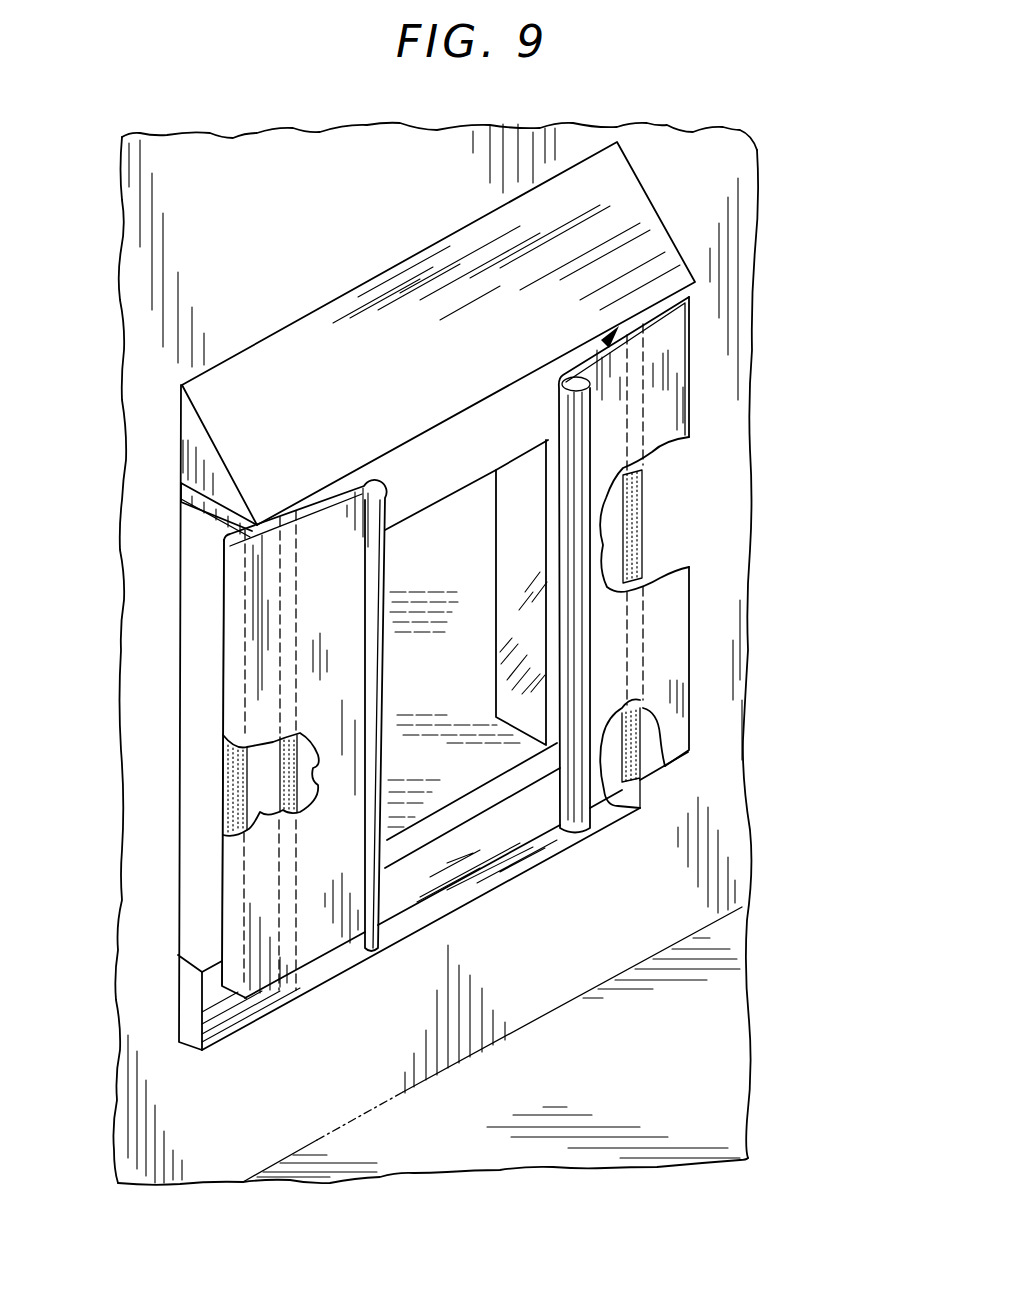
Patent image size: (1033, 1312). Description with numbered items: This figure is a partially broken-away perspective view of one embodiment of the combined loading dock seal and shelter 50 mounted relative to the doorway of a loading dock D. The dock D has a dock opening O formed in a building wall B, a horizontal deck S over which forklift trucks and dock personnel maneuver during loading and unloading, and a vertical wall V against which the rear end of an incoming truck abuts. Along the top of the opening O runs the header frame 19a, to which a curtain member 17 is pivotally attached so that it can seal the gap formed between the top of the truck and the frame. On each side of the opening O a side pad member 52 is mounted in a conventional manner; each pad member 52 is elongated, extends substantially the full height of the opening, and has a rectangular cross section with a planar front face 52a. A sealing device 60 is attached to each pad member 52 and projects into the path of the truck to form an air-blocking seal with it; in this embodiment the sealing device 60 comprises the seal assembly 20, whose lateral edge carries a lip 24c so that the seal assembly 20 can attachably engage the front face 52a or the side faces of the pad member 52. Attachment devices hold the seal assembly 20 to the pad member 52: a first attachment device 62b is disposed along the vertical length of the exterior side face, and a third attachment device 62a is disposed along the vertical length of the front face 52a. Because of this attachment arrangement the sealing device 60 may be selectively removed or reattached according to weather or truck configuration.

The header frame 19a is at (195, 462).
The side pad member 52 is at (195, 578).
The lip 24c is at (235, 604).
The seal assembly 20 is at (315, 606).
The front face 52a is at (257, 773).
The first attachment device 62b is at (283, 807).
The third attachment device 62a is at (232, 825).
The sealing device 60 is at (277, 1040).
The curtain member 17 is at (497, 457).
The loading dock D is at (692, 210).
The building wall B is at (338, 234).
The dock opening O is at (460, 567).
The deck S is at (429, 768).
The vertical wall V is at (530, 834).
The combined loading dock seal and shelter 50 is at (813, 240).